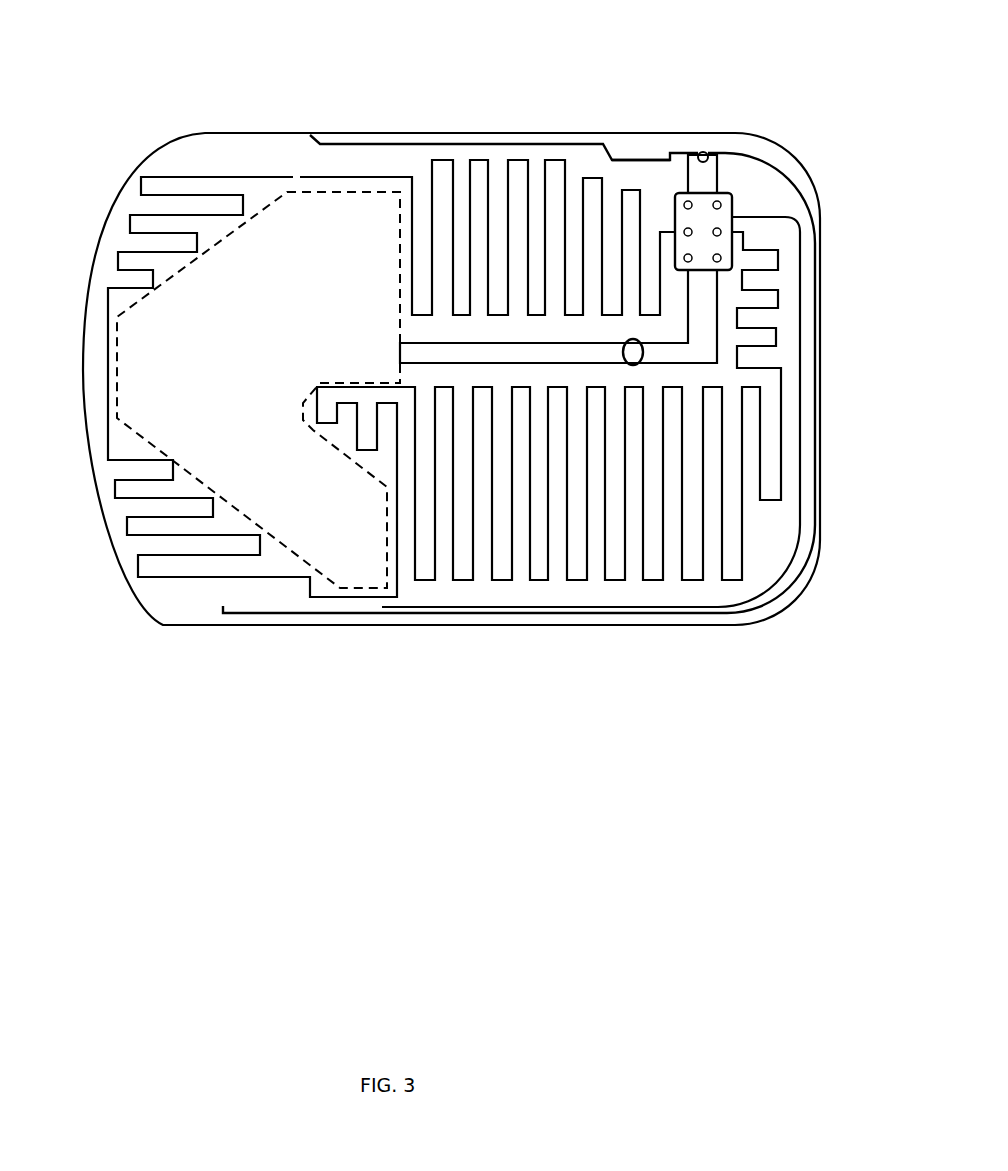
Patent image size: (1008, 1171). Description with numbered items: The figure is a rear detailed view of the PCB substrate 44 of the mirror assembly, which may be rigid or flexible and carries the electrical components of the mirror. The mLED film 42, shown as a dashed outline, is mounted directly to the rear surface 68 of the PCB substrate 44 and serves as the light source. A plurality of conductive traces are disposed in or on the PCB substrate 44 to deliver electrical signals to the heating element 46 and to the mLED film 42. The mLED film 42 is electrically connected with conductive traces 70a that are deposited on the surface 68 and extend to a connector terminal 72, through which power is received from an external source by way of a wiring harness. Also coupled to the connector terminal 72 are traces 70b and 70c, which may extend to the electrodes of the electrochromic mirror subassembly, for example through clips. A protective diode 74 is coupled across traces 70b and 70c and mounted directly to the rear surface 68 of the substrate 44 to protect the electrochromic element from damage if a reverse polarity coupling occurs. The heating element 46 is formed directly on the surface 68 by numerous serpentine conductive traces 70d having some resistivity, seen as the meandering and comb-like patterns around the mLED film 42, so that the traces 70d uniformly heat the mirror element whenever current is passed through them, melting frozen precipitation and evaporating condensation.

The surface 68 is at (200, 150).
The PCB substrate 44 is at (820, 497).
The mLED film 42 is at (265, 375).
The heating element 46 is at (557, 584).
The conductive traces 70a is at (645, 355).
The trace 70b is at (783, 170).
The trace 70c is at (668, 158).
The serpentine conductive traces 70d is at (130, 222).
The connector terminal 72 is at (735, 215).
The protective diode 74 is at (708, 157).